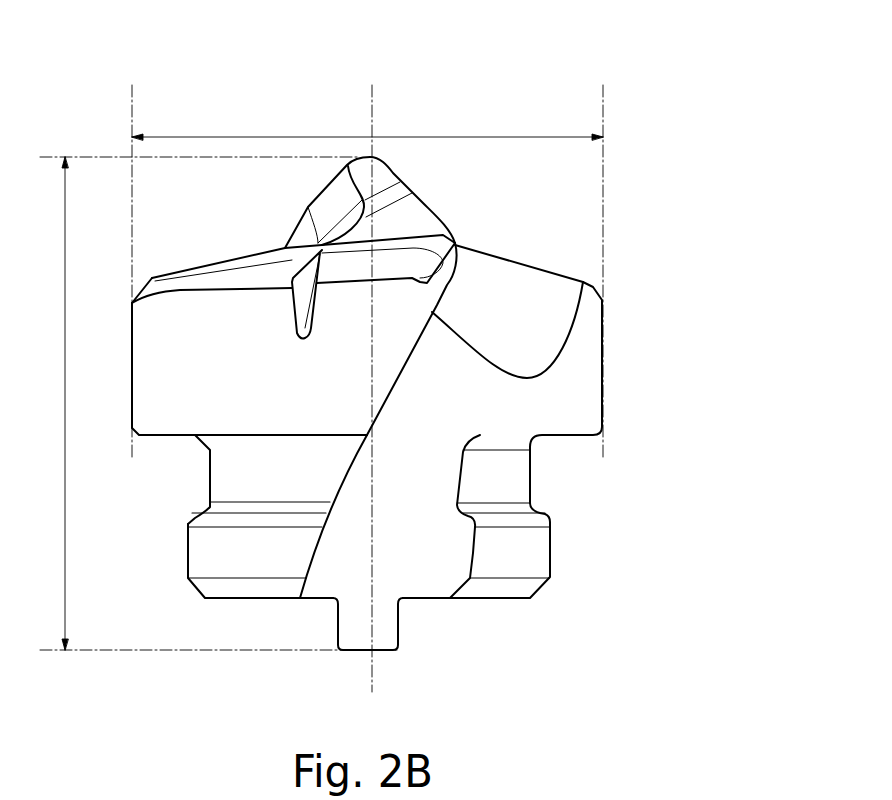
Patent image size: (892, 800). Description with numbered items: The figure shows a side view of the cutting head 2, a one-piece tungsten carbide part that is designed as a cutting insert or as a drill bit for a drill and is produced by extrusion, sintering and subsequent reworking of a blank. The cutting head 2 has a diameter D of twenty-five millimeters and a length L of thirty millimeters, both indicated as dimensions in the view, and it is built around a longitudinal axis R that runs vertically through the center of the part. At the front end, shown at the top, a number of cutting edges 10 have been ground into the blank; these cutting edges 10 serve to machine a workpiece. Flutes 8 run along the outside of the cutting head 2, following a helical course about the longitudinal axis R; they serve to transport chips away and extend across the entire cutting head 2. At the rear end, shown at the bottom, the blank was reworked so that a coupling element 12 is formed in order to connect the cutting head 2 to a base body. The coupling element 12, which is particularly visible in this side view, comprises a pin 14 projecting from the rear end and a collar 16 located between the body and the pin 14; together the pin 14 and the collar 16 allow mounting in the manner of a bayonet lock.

The cutting head 2 is at (118, 268).
The flutes 8 is at (473, 400).
The cutting edges 10 is at (432, 225).
The coupling element 12 is at (468, 588).
The pin 14 is at (385, 672).
The collar 16 is at (550, 545).
The diameter D is at (178, 137).
The length L is at (65, 472).
The longitudinal axis R is at (372, 118).